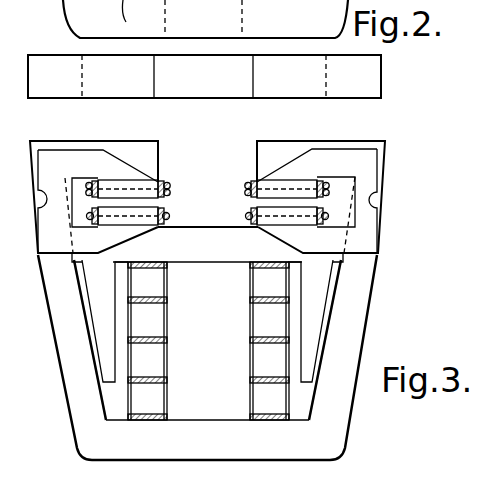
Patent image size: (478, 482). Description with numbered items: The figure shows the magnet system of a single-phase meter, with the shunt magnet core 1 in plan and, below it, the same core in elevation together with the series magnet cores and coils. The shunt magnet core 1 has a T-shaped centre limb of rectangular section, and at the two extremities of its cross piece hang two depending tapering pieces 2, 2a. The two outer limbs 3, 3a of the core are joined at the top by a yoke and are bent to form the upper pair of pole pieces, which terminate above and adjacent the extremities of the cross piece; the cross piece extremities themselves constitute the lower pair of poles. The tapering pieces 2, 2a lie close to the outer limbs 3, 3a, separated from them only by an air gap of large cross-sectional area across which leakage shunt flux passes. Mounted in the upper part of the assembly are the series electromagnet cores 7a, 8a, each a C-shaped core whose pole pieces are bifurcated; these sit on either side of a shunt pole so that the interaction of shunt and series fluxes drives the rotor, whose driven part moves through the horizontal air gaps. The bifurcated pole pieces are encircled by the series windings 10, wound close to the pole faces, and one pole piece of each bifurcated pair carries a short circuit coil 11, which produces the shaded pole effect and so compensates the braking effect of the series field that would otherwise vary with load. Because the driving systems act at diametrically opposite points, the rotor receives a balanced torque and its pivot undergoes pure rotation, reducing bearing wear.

In FIG. 2, the shunt magnet core 1 is at (204, 76).
In FIG. 3, the shunt magnet core 1 is at (207, 341).
In FIG. 3, the depending tapering piece 2 is at (100, 312).
In FIG. 3, the depending tapering piece 2a is at (311, 322).
In FIG. 3, the outer limb 3 is at (57, 281).
In FIG. 3, the outer limb 3a is at (360, 283).
In FIG. 3, the series electromagnet core 7a is at (78, 158).
In FIG. 3, the series electromagnet core 8a is at (315, 148).
In FIG. 3, the series winding 10 is at (247, 213).
In FIG. 3, the short circuit coil 11 is at (89, 213).